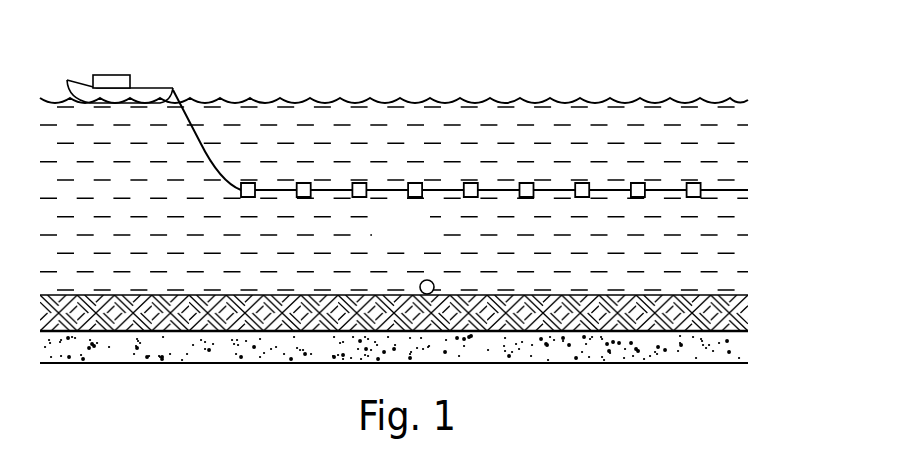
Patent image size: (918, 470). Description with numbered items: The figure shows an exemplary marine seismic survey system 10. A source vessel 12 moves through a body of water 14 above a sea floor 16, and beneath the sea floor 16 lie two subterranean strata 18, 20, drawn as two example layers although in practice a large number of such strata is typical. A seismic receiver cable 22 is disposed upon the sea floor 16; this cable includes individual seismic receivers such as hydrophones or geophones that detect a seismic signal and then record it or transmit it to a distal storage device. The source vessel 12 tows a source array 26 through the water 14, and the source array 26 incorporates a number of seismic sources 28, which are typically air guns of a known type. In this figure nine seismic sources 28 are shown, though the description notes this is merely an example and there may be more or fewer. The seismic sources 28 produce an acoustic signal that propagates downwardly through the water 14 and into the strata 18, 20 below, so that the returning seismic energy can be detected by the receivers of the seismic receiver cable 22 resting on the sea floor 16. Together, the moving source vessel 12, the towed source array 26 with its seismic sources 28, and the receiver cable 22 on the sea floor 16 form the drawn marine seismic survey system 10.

The marine seismic survey system 10 is at (438, 98).
The source vessel 12 is at (146, 88).
The body of water 14 is at (420, 248).
The sea floor 16 is at (703, 295).
The subterranean stratum 18 is at (712, 310).
The subterranean stratum 20 is at (667, 342).
The seismic receiver cable 22 is at (435, 285).
The source array 26 is at (208, 133).
The seismic sources 28 is at (249, 183).